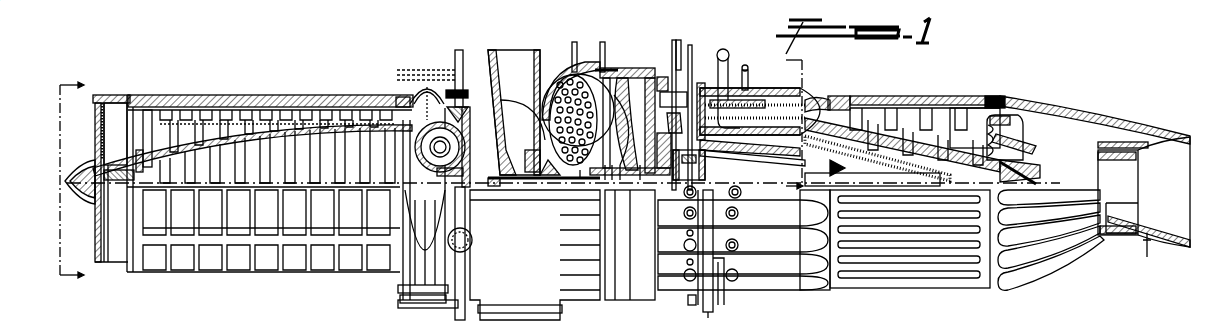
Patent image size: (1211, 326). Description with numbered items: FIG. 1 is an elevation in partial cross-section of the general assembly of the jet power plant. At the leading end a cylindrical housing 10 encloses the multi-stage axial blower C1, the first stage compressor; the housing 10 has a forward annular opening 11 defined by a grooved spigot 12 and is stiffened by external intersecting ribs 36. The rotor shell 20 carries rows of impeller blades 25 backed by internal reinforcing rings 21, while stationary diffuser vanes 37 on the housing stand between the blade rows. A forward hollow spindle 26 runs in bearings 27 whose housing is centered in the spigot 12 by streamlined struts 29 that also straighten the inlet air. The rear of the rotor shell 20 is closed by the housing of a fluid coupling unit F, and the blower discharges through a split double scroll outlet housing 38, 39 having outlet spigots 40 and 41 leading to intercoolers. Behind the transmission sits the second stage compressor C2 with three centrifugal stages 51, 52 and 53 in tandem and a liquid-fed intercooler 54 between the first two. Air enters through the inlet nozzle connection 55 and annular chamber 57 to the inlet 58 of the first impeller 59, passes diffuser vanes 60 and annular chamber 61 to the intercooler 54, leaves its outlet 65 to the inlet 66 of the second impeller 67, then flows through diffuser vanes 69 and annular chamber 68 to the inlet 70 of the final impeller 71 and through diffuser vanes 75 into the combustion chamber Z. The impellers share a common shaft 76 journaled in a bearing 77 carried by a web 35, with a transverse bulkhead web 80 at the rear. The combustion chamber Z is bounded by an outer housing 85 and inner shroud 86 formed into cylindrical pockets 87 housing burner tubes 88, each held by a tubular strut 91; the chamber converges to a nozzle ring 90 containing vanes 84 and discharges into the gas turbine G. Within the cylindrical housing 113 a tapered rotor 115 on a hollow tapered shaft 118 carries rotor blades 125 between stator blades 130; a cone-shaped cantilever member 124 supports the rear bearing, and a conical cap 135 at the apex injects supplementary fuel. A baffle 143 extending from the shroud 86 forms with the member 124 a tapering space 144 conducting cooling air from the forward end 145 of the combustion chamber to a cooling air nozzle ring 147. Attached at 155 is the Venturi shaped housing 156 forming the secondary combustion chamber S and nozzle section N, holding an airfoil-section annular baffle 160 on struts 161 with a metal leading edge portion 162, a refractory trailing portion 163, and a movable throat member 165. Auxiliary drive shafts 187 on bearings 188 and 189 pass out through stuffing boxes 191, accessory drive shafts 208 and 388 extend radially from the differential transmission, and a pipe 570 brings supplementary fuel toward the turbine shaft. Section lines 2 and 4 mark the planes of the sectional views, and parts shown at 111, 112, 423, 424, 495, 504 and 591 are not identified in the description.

The section line 2- 2 is at (72, 181).
The section line 4- 4 is at (794, 123).
The cylindrical housing 10 is at (212, 95).
The annular opening 11 is at (88, 134).
The grooved spigot 12 is at (100, 96).
The rotor shell 20 is at (152, 148).
The reinforcing rings 21 is at (238, 152).
The impeller blades 25 is at (298, 127).
The hollow spindle 26 is at (141, 173).
The bearings 27 is at (118, 182).
The struts 29 is at (107, 141).
The lateral diaphragm or web 35 is at (416, 158).
The ribs 36 is at (340, 95).
The stationary diffuser vanes 37 is at (272, 110).
The split double scroll outlet housing 38 is at (412, 96).
The split double scroll outlet housing 39 is at (414, 139).
The outlet spigot 40 is at (420, 68).
The outlet spigot 41 is at (400, 302).
The first stage of centrifugal compression 51 is at (536, 159).
The second stage of centrifugal compression 52 is at (573, 122).
The third stage of centrifugal compression 53 is at (630, 130).
The liquid-fed intercooler 54 is at (600, 68).
The inlet nozzle connection 55 is at (495, 80).
The annular chamber 57 is at (522, 120).
The inlet 58 is at (524, 180).
The first centrifugal impeller 59 is at (552, 178).
The stationary diffuser vanes 60 is at (560, 70).
The annular chamber 61 is at (572, 74).
The outlet 65 is at (581, 178).
The inlet 66 is at (612, 180).
The second centrifugal blower impeller 67 is at (608, 178).
The annular shaped chamber 68 is at (628, 82).
The stationary diffuser vanes 69 is at (631, 124).
The inlet 70 is at (622, 180).
The third centrifugal compressor impeller 71 is at (642, 182).
The stationary diffuser vanes 75 is at (662, 75).
The shaft 76 is at (538, 190).
The bearing 77 is at (494, 184).
The transverse bulkhead web 80 is at (736, 200).
The vanes 84 is at (822, 98).
The housing 85 is at (792, 92).
The shroud 86 is at (790, 150).
The pockets or barrels 87 is at (731, 112).
The burner tubes 88 is at (760, 140).
The annular nozzle ring 90 is at (840, 96).
The streamlined tubular strut 91 is at (745, 66).
The control lever 111 is at (710, 237).
The linkage pin 112 is at (687, 235).
The cylindrical housing 113 is at (905, 96).
The tapered rotor 115 is at (930, 108).
The hollow tapered shaft 118 is at (878, 180).
The cantilever member 124 is at (770, 176).
The impeller blades 125 is at (902, 149).
The stator blades 130 is at (955, 108).
The conical cap member 135 is at (1035, 183).
The baffle 143 is at (820, 160).
The tapering annular space 144 is at (812, 170).
The annular forward end of combustion chamber 145 is at (673, 99).
The cooling air nozzle ring 147 is at (860, 110).
The attachment 155 is at (992, 96).
The Venturi shaped housing 156 is at (1070, 124).
The annular baffle 160 is at (1000, 143).
The struts 161 is at (1010, 102).
The leading edge portion 162 is at (1022, 152).
The body and trailing edge portion 163 is at (1022, 160).
The annular throat member 165 is at (1106, 186).
The auxiliary drive shaft 187 is at (692, 45).
The bearing 188 is at (707, 165).
The bearing 189 is at (723, 49).
The stuffing boxes 191 is at (676, 60).
The accessory drive shafts 208 is at (455, 58).
The accessory shaft 388 is at (455, 305).
The igniter 423 is at (578, 72).
The fuel injector 424 is at (606, 70).
The vent pipe 495 is at (678, 42).
The linkage 504 is at (687, 262).
The pipe 570 is at (724, 305).
The drain fitting 591 is at (690, 305).
The multi-stage axial blower C1 is at (263, 228).
The second stage air compressor unit C2 is at (535, 255).
The fluid coupling unit F is at (423, 205).
The gas turbine G is at (905, 250).
The secondary combustion chamber S is at (1070, 173).
The combustion chamber Z is at (758, 218).
The nozzle section N is at (1154, 184).